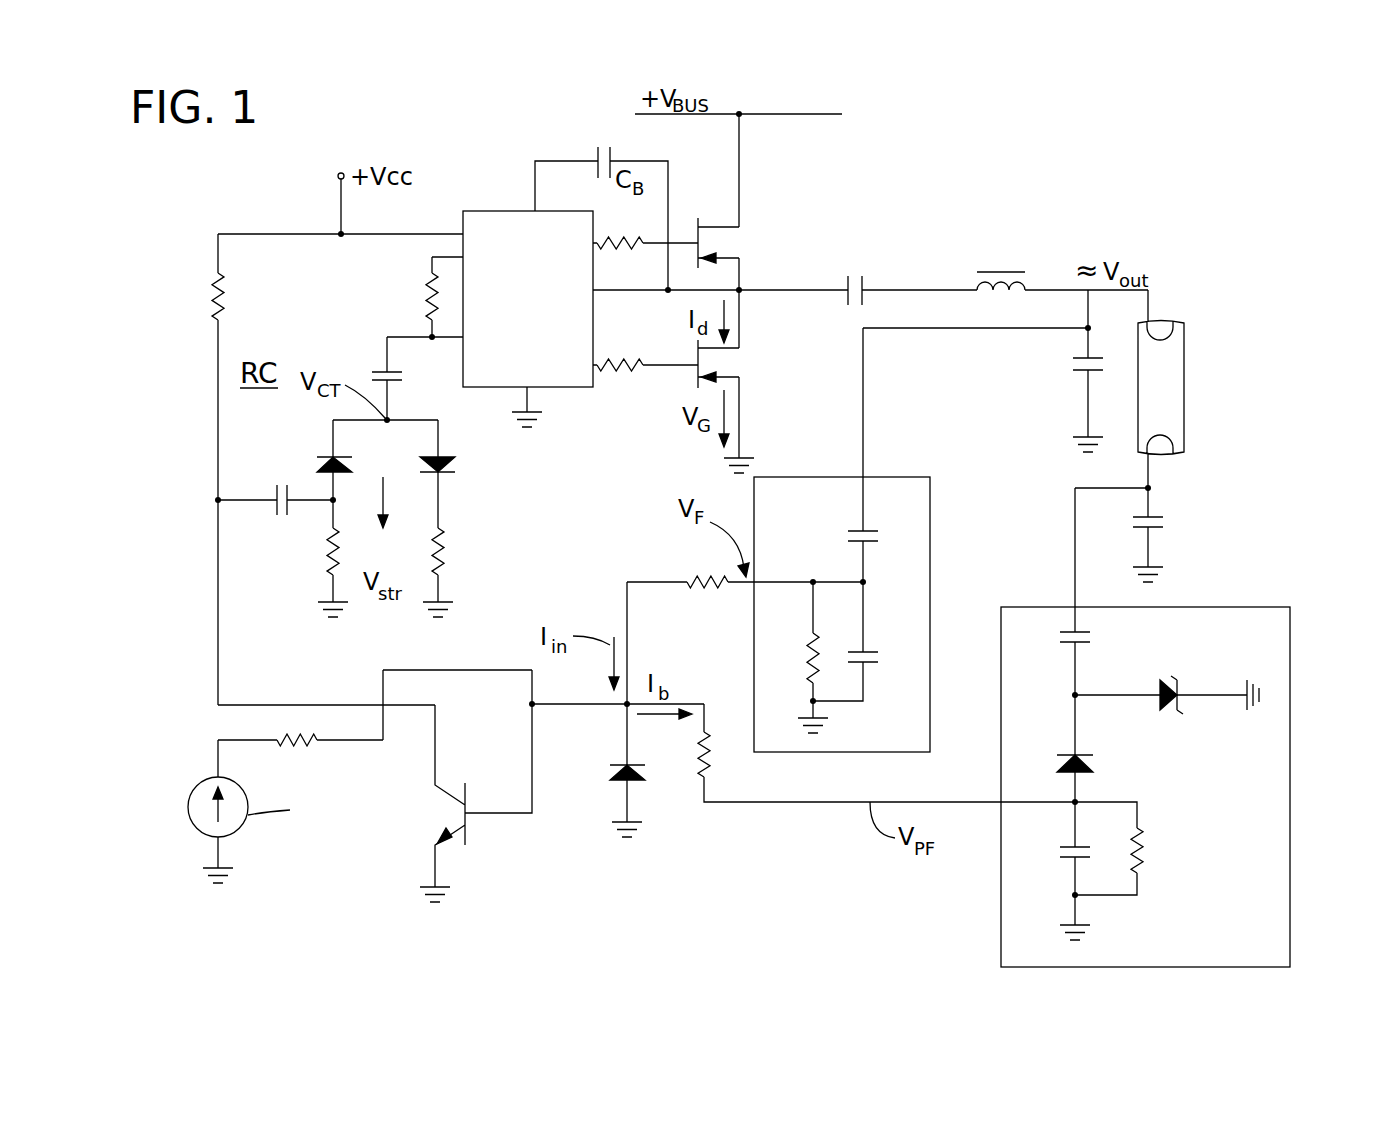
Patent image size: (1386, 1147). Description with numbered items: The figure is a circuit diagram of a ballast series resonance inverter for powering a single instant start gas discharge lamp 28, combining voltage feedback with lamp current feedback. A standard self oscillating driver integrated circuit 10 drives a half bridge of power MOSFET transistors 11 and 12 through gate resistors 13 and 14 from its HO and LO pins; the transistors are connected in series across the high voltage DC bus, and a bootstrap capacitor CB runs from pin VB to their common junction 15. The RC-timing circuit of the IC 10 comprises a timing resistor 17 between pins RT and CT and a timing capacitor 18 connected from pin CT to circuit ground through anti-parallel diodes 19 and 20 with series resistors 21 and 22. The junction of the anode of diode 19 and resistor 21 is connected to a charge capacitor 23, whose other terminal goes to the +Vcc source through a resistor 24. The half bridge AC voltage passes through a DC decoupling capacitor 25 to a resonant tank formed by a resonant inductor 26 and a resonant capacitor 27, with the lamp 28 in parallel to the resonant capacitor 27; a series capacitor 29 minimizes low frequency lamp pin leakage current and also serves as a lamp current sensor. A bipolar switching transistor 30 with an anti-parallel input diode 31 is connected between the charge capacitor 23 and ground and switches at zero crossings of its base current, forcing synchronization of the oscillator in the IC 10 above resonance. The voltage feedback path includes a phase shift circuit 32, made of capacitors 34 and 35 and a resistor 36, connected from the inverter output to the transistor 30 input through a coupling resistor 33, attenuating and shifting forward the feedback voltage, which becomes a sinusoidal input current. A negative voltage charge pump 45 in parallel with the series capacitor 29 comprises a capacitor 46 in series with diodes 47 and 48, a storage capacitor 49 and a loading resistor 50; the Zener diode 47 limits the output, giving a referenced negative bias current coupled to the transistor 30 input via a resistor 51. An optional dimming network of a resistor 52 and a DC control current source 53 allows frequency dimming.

The self oscillating driver integrated circuit 10 is at (547, 316).
The power MOSFET transistor 11 is at (718, 257).
The power MOSFET transistor 12 is at (718, 377).
The gate resistor 13 is at (630, 238).
The gate resistor 14 is at (623, 370).
The common junction 15 is at (743, 287).
The timing resistor 17 is at (430, 293).
The timing capacitor 18 is at (375, 370).
The diode 19 is at (317, 468).
The diode 20 is at (455, 462).
The series resistor 21 is at (330, 550).
The series resistor 22 is at (443, 550).
The charge capacitor 23 is at (277, 495).
The resistor 24 is at (220, 290).
The DC decoupling capacitor 25 is at (862, 280).
The resonant inductor 26 is at (1000, 272).
The resonant capacitor 27 is at (1080, 360).
The discharge lamp 28 is at (1185, 377).
The series capacitor 29 is at (1157, 515).
The bipolar switching transistor 30 is at (470, 830).
The anti-parallel input diode 31 is at (637, 782).
The phase shift circuit 32 is at (818, 477).
The coupling resistor 33 is at (712, 580).
The capacitor 34 is at (858, 530).
The capacitor 35 is at (858, 650).
The resistor 36 is at (808, 657).
The negative voltage charge pump 45 is at (1270, 607).
The capacitor 46 is at (1090, 632).
The Zener diode 47 is at (1168, 675).
The diode 48 is at (1085, 755).
The storage capacitor 49 is at (1060, 855).
The loading resistor 50 is at (1140, 845).
The resistor 51 is at (712, 757).
The resistor 52 is at (313, 745).
The DC control current source 53 is at (238, 830).